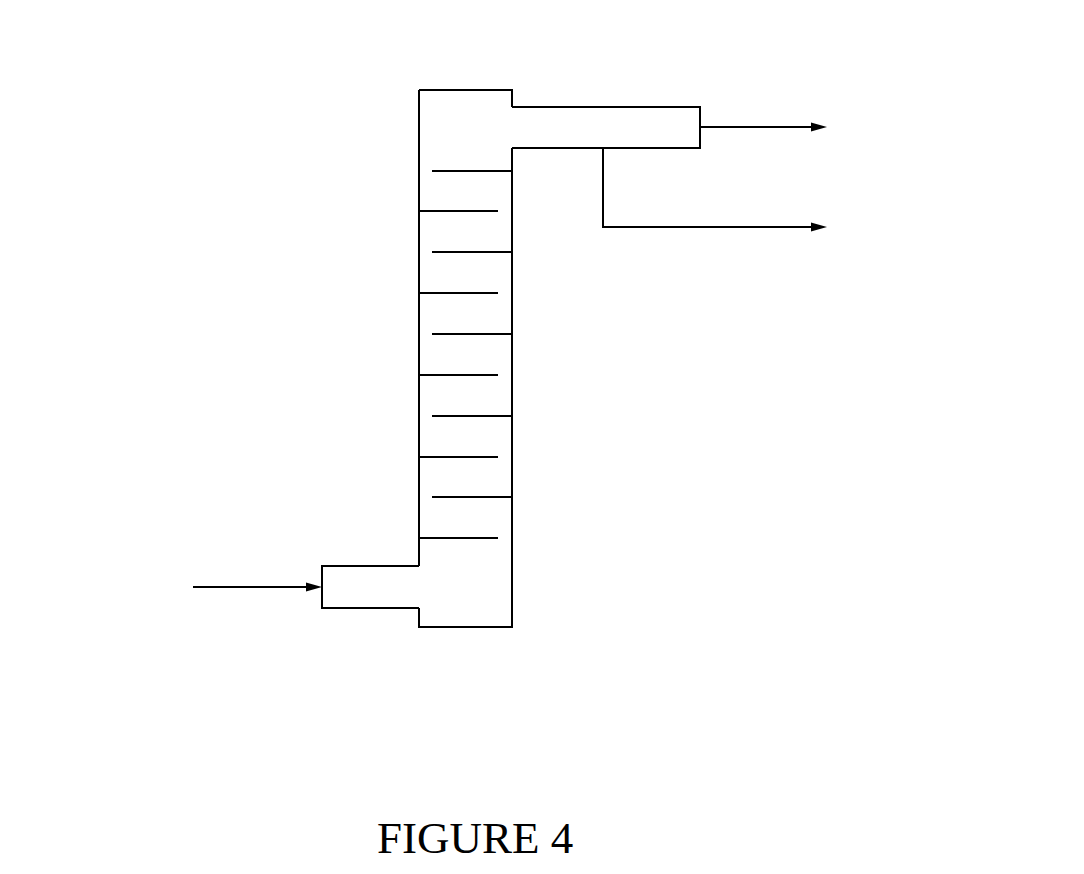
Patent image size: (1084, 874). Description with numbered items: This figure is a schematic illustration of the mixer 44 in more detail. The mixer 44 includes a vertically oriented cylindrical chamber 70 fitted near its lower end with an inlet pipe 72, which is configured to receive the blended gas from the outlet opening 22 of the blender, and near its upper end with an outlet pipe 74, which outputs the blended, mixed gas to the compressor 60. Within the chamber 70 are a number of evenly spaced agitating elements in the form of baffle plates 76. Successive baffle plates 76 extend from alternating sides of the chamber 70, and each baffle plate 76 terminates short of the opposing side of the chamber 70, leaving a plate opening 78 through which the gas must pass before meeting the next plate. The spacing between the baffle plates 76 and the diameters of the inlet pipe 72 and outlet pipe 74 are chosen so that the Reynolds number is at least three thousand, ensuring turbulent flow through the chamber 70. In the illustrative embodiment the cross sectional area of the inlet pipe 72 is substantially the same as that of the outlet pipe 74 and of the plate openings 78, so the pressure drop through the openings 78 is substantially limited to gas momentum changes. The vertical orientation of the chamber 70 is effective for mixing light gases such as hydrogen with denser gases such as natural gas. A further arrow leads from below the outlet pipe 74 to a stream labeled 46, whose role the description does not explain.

The mixer 44 is at (496, 368).
The cylindrical chamber 70 is at (512, 443).
The inlet pipe 72 is at (367, 597).
The outlet pipe 74 is at (570, 120).
The baffle plates 76 is at (492, 333).
The plate opening 78 is at (427, 244).
The outlet opening 22 is at (183, 587).
The compressor 60 is at (819, 132).
The side stream destination 46 is at (770, 196).